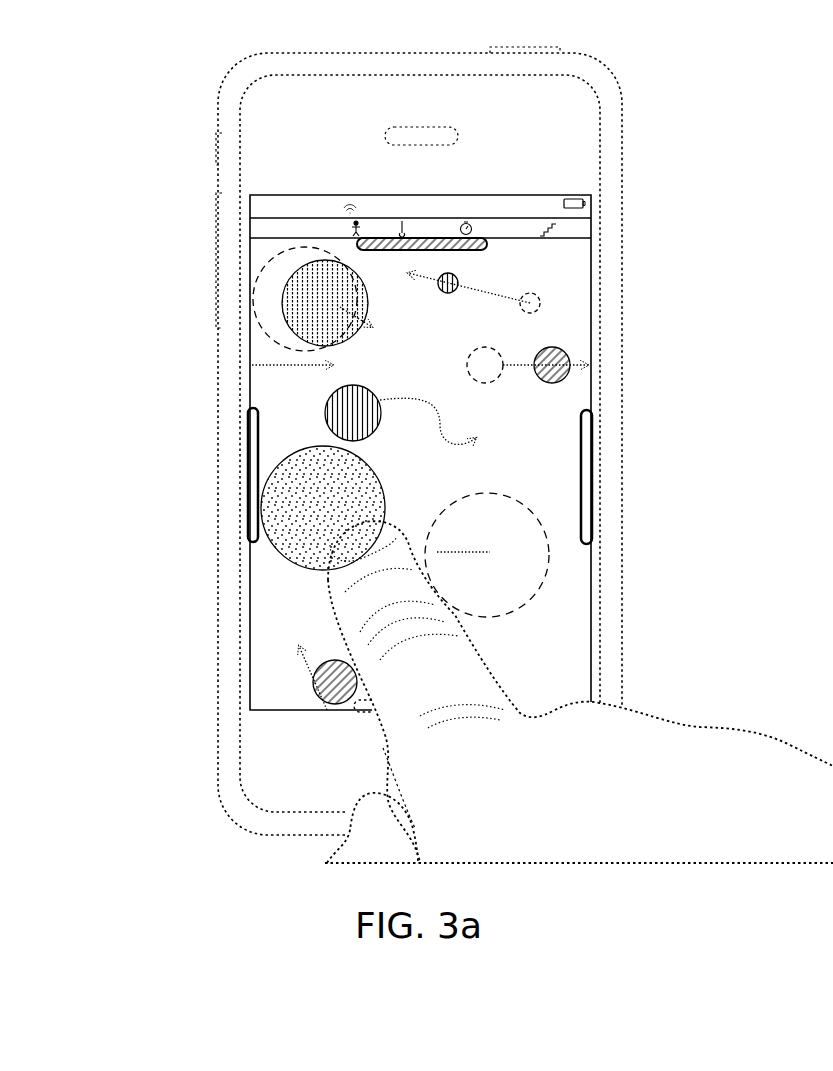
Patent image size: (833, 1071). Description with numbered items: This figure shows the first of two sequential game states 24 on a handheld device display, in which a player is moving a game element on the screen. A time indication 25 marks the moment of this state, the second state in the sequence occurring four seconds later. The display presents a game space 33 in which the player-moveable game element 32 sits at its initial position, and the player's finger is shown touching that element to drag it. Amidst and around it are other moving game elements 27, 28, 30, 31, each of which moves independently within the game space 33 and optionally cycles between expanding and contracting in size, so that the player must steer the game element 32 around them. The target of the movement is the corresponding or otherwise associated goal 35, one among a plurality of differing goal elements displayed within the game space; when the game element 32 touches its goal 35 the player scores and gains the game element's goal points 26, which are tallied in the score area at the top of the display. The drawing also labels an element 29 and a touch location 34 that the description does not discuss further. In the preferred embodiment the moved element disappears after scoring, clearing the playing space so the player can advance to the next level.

The game state 24 is at (270, 347).
The elapsed time indication 25 is at (493, 223).
The goal points 26 is at (253, 228).
The moving game element 27 is at (328, 303).
The moving game element 28 is at (450, 283).
The moving target object 29 is at (552, 365).
The moving game element 30 is at (355, 413).
The moving game element 31 is at (338, 683).
The game element 32 is at (323, 508).
The game space 33 is at (532, 512).
The touch point 34 is at (437, 552).
The goal 35 is at (253, 473).